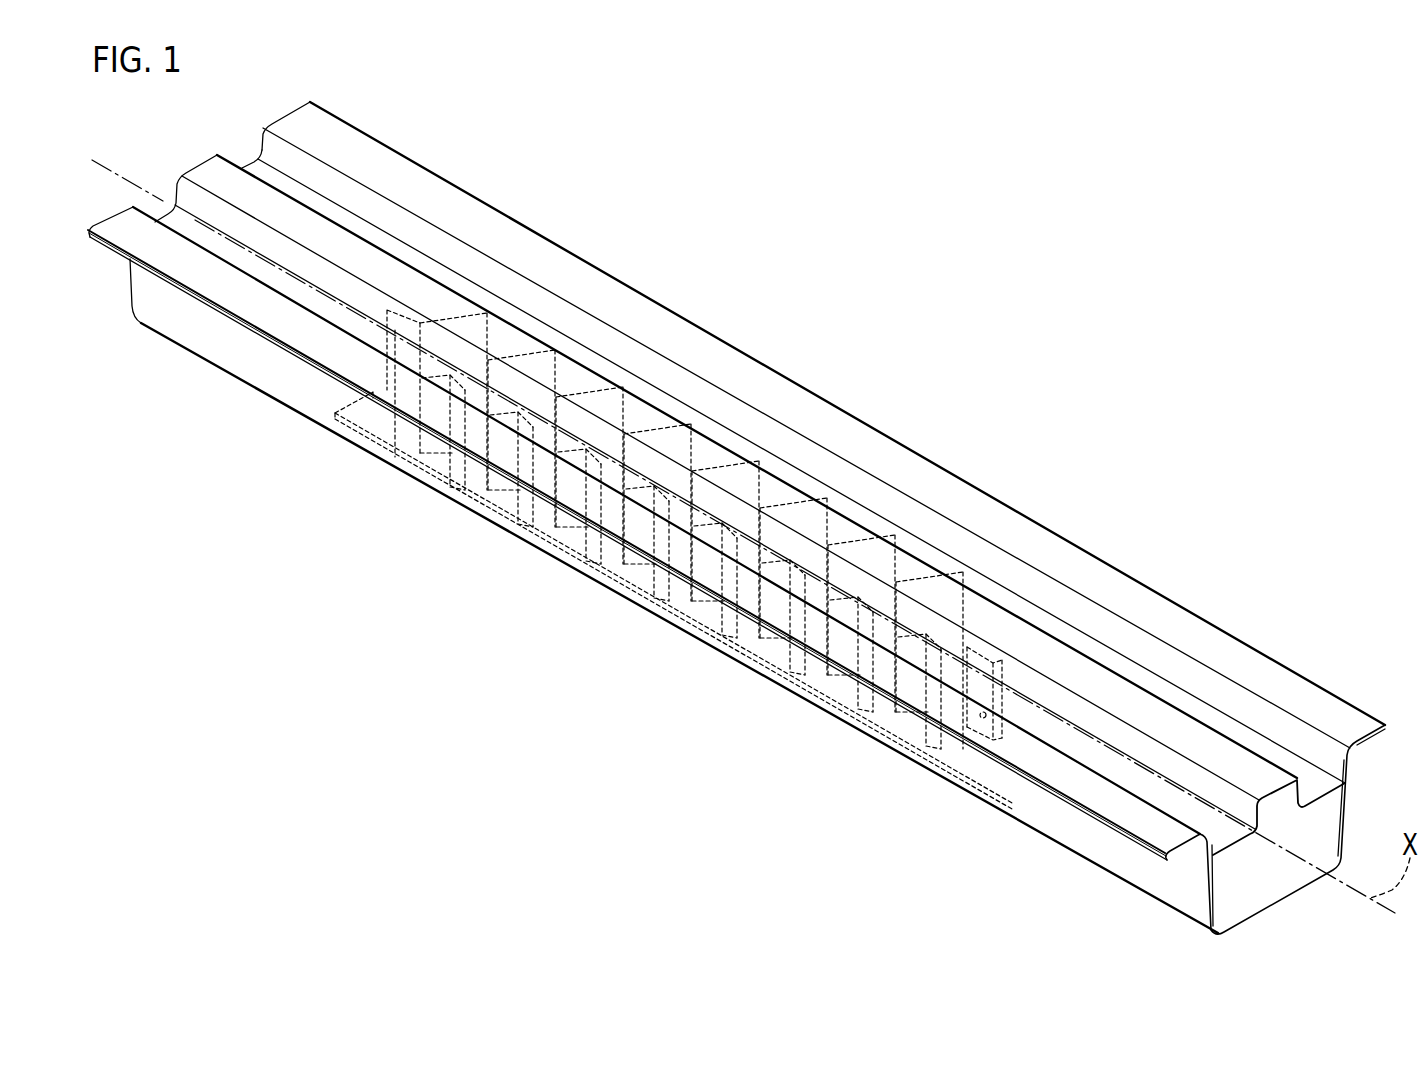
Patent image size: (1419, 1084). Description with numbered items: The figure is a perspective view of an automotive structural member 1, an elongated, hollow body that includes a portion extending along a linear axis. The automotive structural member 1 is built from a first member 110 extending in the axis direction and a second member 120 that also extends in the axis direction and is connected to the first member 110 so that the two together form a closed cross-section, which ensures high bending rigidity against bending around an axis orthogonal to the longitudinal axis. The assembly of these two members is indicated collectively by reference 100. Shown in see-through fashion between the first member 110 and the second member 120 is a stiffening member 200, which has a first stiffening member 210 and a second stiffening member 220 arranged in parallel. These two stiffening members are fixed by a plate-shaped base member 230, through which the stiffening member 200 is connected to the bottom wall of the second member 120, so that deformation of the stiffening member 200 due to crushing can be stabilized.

The automotive structural member 1 is at (1022, 472).
The housing 100 is at (1413, 570).
The first member 110 is at (1252, 770).
The second member 120 is at (1348, 797).
The stiffening member 200 is at (798, 892).
The first stiffening member 210 is at (813, 693).
The second stiffening member 220 is at (990, 647).
The base member 230 is at (353, 432).